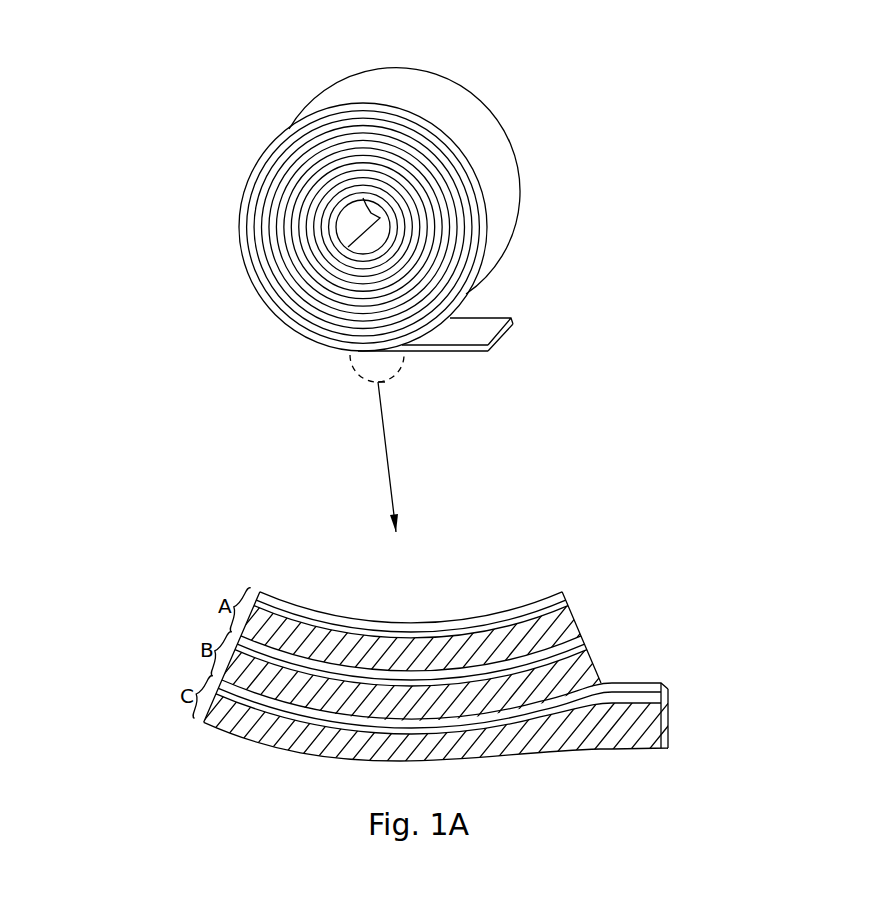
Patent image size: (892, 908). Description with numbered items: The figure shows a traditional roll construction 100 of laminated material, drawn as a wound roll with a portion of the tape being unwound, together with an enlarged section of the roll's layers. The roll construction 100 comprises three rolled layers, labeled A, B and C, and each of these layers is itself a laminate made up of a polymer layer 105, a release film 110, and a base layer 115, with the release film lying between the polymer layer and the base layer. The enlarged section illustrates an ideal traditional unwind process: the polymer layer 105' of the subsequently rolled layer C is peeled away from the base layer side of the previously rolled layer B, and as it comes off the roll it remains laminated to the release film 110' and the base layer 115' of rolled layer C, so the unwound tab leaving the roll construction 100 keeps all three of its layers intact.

The roll construction 100 is at (248, 90).
The polymer layer 105 is at (415, 643).
The release film 110 is at (414, 642).
The base layer 115 is at (433, 584).
The polymer layer of subsequently rolled layer 105' is at (689, 669).
The release film of subsequently rolled layer 110' is at (689, 708).
The base layer of subsequently rolled layer 115' is at (433, 584).